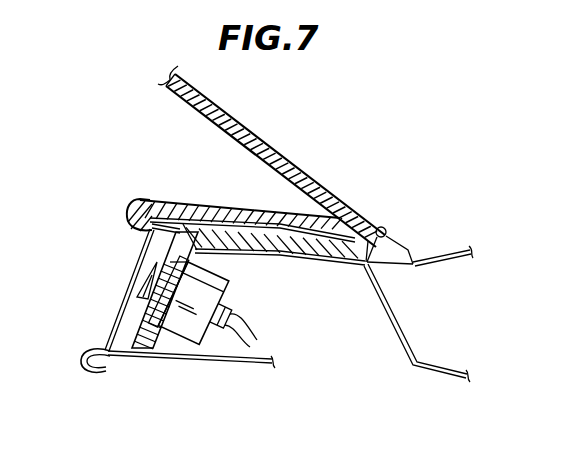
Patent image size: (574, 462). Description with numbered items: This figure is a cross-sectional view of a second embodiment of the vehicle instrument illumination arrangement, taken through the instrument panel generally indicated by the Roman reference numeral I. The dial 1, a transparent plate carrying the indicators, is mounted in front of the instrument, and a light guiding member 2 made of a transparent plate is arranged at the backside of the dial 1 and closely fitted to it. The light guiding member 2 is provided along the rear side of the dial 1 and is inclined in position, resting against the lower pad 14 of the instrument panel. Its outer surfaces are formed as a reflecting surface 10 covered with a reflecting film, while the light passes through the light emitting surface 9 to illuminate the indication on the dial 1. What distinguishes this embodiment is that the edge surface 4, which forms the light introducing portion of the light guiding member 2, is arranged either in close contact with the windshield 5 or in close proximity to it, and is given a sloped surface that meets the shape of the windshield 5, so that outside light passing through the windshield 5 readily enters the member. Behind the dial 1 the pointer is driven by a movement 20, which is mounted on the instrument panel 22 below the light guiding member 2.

The dial 1 is at (140, 322).
The light guiding member 2 is at (313, 238).
The edge surface 4 is at (358, 213).
The windshield 5 is at (277, 143).
The light emitting surface 9 is at (153, 305).
The reflecting surface 10 is at (192, 217).
The lower pad 14 is at (82, 362).
The movement 20 is at (232, 290).
The instrument panel 22 is at (224, 364).
The instrument panel I is at (128, 245).